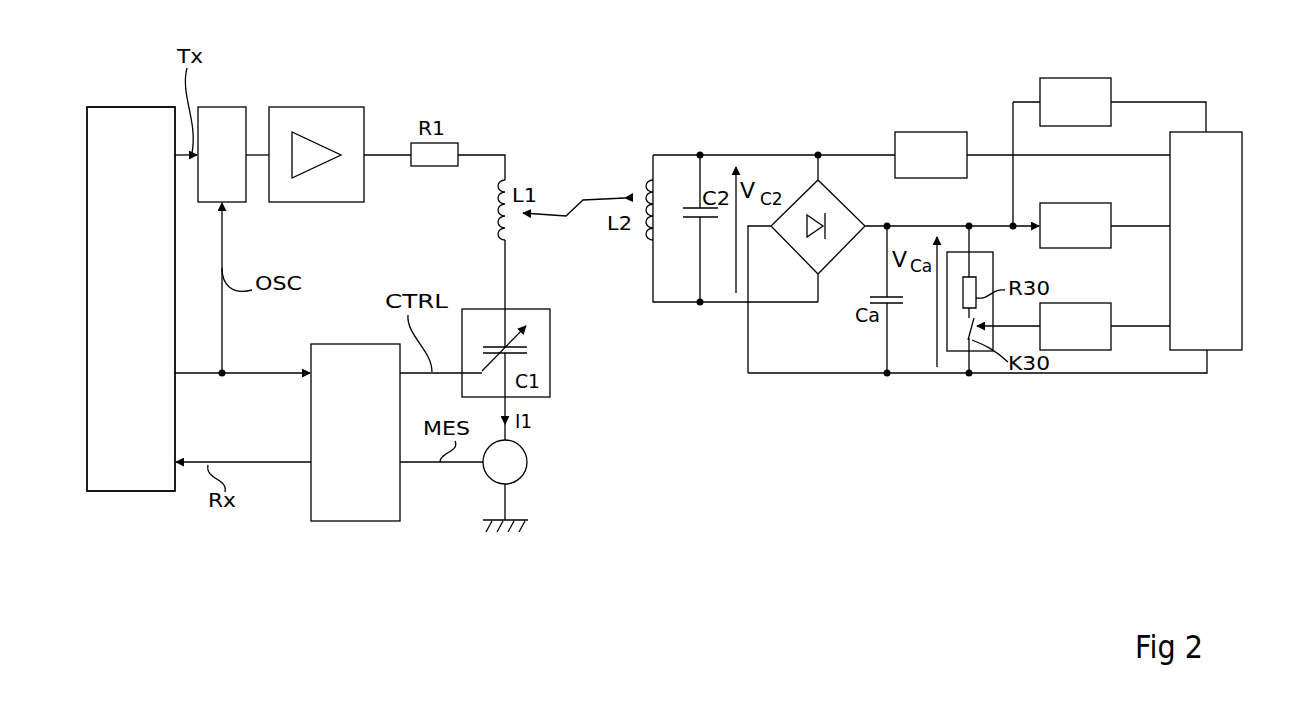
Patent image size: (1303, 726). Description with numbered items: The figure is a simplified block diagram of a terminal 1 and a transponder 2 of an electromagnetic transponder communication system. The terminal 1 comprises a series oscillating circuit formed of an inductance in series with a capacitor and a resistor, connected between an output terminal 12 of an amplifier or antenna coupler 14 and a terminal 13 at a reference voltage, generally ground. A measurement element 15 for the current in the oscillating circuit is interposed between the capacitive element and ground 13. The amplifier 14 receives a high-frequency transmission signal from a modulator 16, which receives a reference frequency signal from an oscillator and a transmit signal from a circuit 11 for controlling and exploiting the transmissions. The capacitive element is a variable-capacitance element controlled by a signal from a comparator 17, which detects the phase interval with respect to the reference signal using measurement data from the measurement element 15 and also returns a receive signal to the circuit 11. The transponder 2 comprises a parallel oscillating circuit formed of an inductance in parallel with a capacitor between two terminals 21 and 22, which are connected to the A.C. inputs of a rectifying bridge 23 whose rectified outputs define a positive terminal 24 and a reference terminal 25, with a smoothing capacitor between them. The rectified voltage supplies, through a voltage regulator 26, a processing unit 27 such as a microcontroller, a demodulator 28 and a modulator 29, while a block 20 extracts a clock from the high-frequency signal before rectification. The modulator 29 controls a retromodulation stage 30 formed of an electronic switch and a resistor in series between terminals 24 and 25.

The terminal 1 is at (270, 560).
The transponder 2 is at (849, 483).
The circuit for controlling and exploiting the transmissions 11 is at (125, 107).
The output terminal 12 is at (386, 156).
The terminal at a reference voltage 13 is at (507, 508).
The amplifier or antenna coupler 14 is at (322, 107).
The element for measuring the current 15 is at (528, 466).
The modulator 16 is at (222, 107).
The comparator 17 is at (340, 521).
The clock extraction block 20 is at (920, 132).
The terminal of the parallel oscillating circuit 21 is at (700, 155).
The terminal of the parallel oscillating circuit 22 is at (700, 305).
The rectifying bridge 23 is at (840, 202).
The positive terminal 24 is at (888, 222).
The reference terminal 25 is at (886, 376).
The voltage regulator 26 is at (1093, 78).
The processing unit 27 is at (1242, 178).
The demodulator 28 is at (1060, 203).
The modulator 29 is at (1065, 303).
The retromodulation stage 30 is at (993, 270).